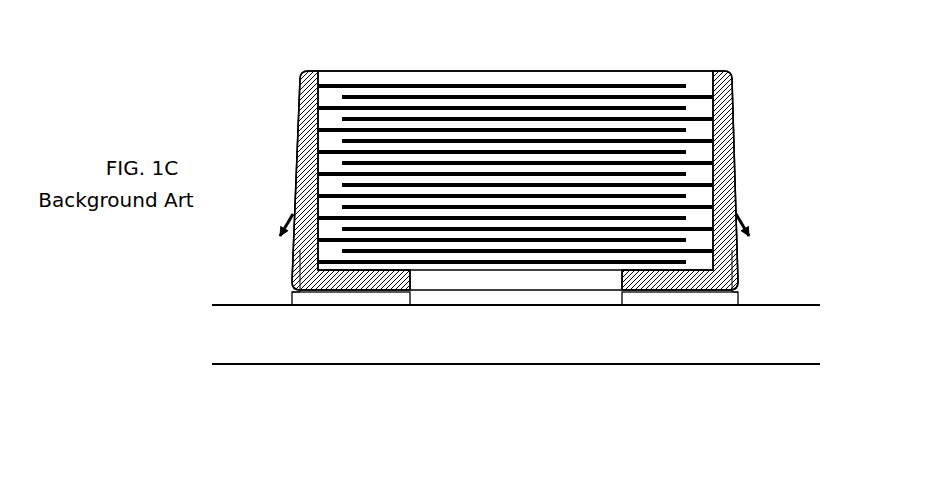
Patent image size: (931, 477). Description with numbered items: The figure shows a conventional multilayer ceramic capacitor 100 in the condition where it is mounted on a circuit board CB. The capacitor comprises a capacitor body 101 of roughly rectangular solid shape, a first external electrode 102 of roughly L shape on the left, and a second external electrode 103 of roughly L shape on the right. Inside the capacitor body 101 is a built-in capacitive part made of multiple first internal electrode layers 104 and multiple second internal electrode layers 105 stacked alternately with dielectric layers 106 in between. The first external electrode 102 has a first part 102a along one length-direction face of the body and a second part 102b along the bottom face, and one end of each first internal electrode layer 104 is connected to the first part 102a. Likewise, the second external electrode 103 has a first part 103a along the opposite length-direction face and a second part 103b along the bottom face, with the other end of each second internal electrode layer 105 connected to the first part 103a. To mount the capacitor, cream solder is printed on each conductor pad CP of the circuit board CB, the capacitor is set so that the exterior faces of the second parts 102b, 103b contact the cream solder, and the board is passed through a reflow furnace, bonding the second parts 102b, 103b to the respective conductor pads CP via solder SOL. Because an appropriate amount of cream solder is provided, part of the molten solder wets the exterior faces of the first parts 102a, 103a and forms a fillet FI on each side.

The multilayer ceramic capacitor 100 is at (514, 158).
The capacitor body 101 is at (515, 153).
The first external electrode 102 is at (351, 186).
The first part of the first external electrode 102a is at (305, 182).
The second part of the first external electrode 102b is at (412, 275).
The second external electrode 103 is at (680, 186).
The first part of the second external electrode 103a is at (722, 182).
The second part of the second external electrode 103b is at (620, 275).
The first internal electrode layers 104 is at (567, 106).
The second internal electrode layers 105 is at (607, 118).
The dielectric layers 106 is at (648, 115).
The fillet FI is at (291, 256).
The circuit board CB is at (238, 357).
The solder SOL is at (297, 294).
The conductor pad CP is at (350, 300).